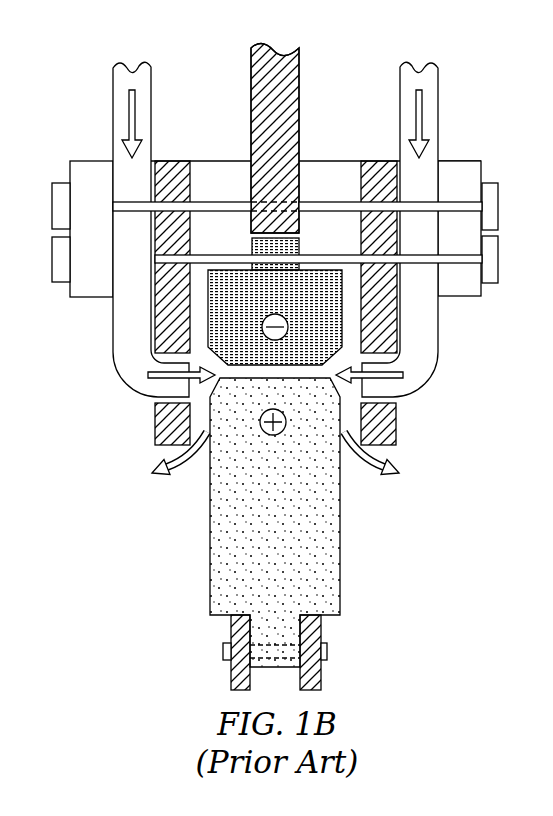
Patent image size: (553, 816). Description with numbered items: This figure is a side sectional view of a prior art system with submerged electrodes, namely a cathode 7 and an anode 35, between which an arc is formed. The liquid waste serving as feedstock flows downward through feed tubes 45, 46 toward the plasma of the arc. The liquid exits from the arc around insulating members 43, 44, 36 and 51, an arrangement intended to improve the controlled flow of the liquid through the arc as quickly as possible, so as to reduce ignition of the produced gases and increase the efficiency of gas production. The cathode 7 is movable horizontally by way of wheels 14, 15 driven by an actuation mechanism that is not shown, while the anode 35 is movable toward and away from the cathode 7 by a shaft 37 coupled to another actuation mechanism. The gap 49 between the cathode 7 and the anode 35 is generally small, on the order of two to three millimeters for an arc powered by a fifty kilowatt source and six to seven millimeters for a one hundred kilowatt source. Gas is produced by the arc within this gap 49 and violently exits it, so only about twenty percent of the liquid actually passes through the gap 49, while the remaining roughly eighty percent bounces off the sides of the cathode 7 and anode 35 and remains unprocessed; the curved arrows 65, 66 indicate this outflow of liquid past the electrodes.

The cathode 7 is at (211, 547).
The wheel 14 is at (316, 617).
The wheel 15 is at (328, 649).
The anode 35 is at (288, 313).
The insulating member 36 is at (315, 193).
The shaft 37 is at (293, 112).
The insulating member 43 is at (165, 167).
The insulating member 44 is at (376, 258).
The feed tube 45 is at (140, 68).
The feed tube 46 is at (433, 156).
The gap 49 is at (288, 372).
The insulating member 51 is at (55, 203).
The coolant outflow 65 is at (158, 467).
The coolant outflow 66 is at (392, 464).